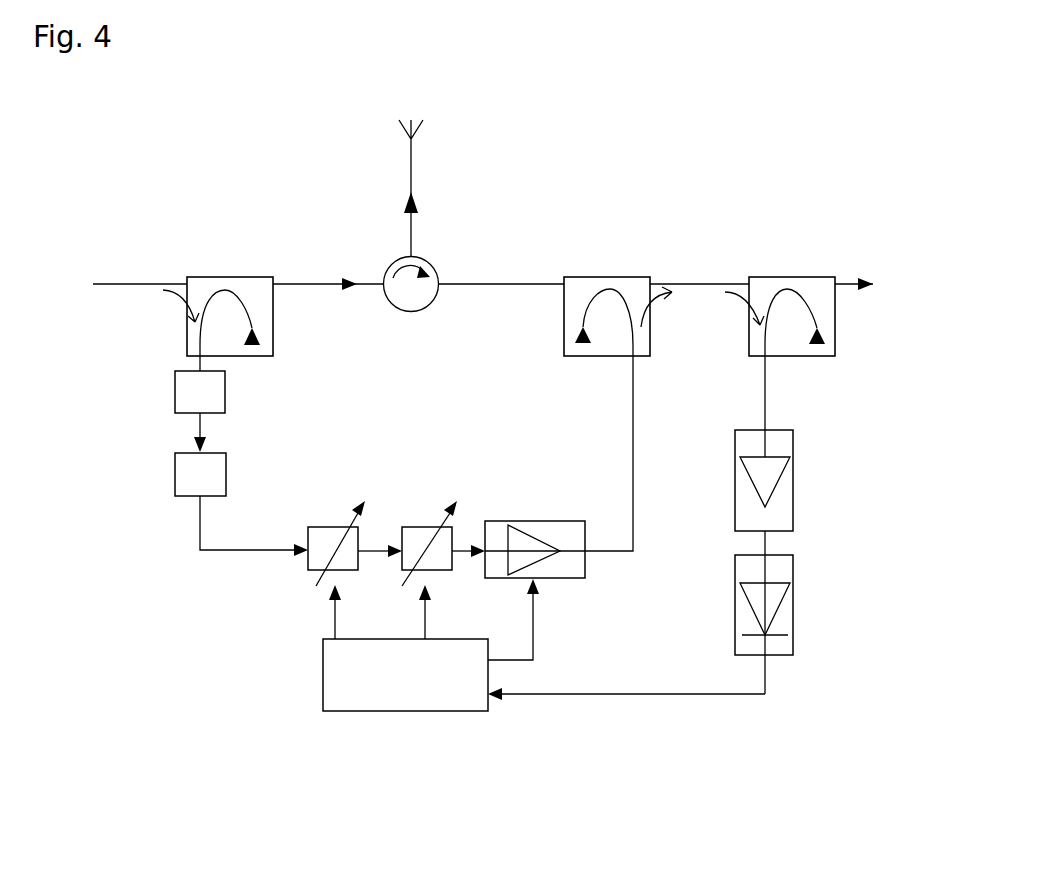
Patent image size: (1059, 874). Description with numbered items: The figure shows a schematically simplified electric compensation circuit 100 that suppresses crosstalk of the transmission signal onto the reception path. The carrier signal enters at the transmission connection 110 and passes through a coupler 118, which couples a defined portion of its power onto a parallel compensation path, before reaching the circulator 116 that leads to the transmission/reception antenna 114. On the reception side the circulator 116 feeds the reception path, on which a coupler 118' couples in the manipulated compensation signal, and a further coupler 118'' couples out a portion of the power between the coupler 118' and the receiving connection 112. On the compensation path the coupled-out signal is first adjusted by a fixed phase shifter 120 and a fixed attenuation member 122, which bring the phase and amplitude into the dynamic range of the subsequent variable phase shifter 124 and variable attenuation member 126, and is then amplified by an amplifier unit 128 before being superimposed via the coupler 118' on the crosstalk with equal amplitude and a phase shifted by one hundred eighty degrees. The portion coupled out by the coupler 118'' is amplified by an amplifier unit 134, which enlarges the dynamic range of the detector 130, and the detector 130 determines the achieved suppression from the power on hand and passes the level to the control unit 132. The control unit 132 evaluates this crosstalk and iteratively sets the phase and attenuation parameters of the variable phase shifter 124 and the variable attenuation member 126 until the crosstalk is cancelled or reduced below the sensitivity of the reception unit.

The transceiver circuit arrangement 100 is at (825, 148).
The transmission connection 110 is at (140, 265).
The receiving connection 112 is at (862, 268).
The transmission/reception antenna 114 is at (438, 188).
The circulator 116 is at (428, 269).
The coupler 118 is at (218, 305).
The coupler 118' is at (618, 299).
The coupler 118'' is at (780, 299).
The fixed phase shifter 120 is at (226, 411).
The fixed attenuation member 122 is at (241, 504).
The variable phase shifter 124 is at (355, 536).
The variable attenuation member 126 is at (442, 535).
The amplifier unit 128 is at (559, 467).
The detector 130 is at (740, 612).
The control unit 132 is at (516, 645).
The amplifier unit 134 is at (740, 443).